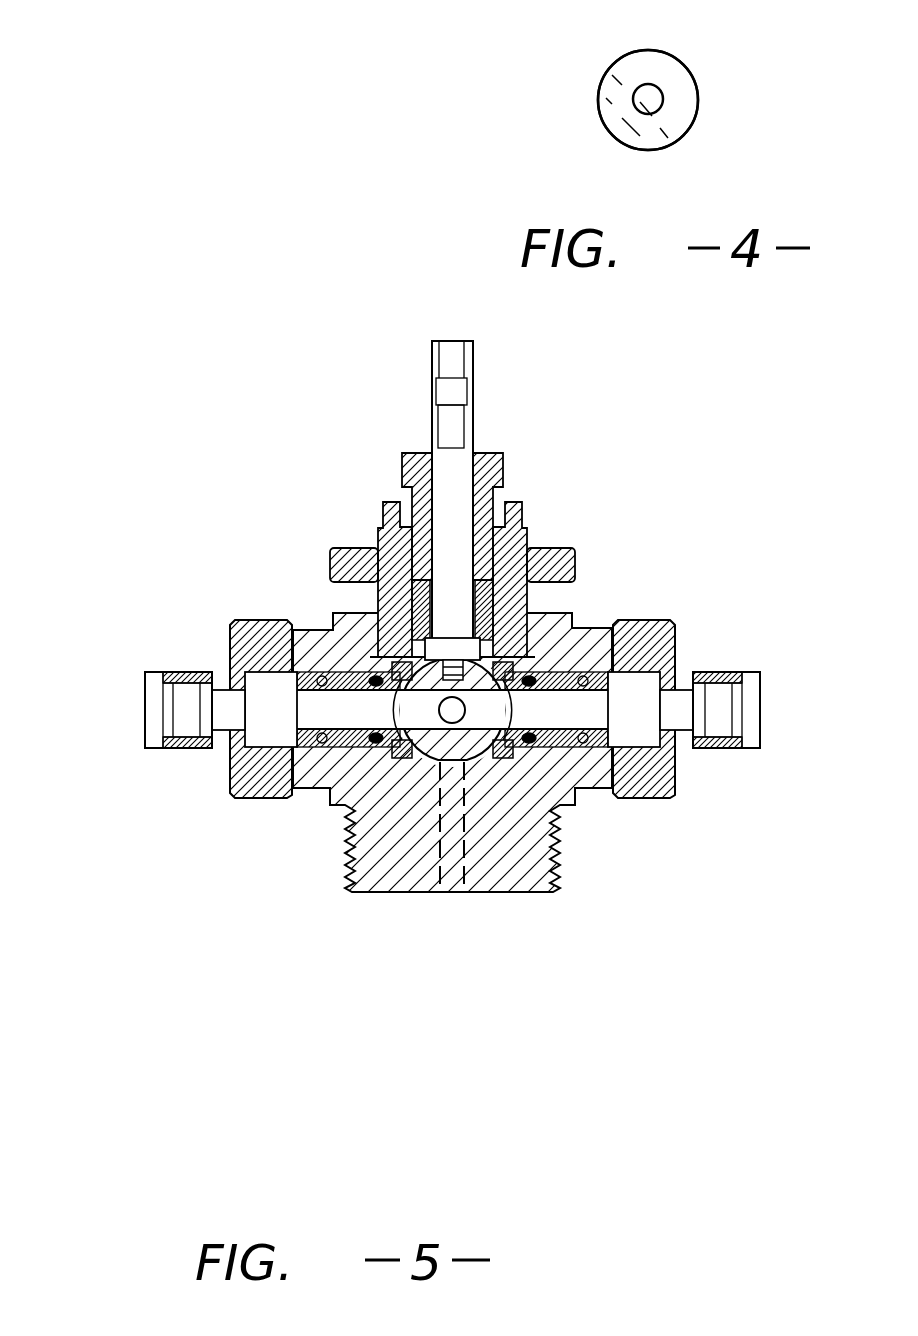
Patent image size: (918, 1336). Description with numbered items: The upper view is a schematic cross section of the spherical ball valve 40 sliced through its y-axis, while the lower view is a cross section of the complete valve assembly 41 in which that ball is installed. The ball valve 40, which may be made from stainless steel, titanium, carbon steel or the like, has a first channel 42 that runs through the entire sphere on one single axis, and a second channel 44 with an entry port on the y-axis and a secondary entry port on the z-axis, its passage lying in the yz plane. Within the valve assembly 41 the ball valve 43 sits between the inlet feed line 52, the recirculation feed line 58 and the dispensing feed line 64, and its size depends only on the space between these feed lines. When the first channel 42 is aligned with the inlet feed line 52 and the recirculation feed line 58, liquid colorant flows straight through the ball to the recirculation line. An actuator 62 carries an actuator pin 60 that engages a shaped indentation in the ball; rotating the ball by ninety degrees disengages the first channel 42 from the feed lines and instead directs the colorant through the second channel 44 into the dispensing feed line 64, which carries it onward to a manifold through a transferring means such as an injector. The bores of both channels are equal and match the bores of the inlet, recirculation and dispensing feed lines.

In FIG. 4, the spherical ball valve 40 is at (740, 38).
In FIG. 5, the valve assembly 41 is at (105, 343).
In FIG. 4, the first channel 42 is at (648, 92).
In FIG. 5, the first channel 42 is at (492, 630).
In FIG. 5, the ball valve 43 is at (385, 618).
In FIG. 4, the second channel 44 is at (592, 92).
In FIG. 5, the second channel 44 is at (433, 763).
In FIG. 5, the inlet feed line 52 is at (150, 692).
In FIG. 5, the recirculation feed line 58 is at (745, 700).
In FIG. 5, the actuator pin 60 is at (528, 575).
In FIG. 5, the actuator 62 is at (455, 345).
In FIG. 5, the dispensing feed line 64 is at (452, 877).